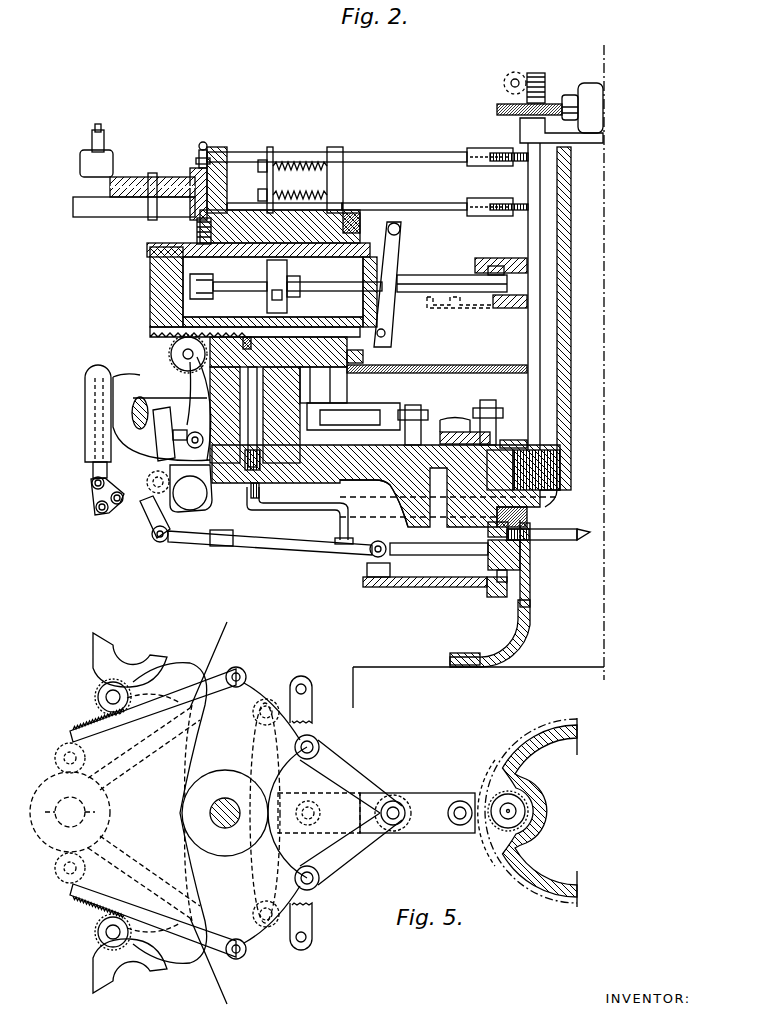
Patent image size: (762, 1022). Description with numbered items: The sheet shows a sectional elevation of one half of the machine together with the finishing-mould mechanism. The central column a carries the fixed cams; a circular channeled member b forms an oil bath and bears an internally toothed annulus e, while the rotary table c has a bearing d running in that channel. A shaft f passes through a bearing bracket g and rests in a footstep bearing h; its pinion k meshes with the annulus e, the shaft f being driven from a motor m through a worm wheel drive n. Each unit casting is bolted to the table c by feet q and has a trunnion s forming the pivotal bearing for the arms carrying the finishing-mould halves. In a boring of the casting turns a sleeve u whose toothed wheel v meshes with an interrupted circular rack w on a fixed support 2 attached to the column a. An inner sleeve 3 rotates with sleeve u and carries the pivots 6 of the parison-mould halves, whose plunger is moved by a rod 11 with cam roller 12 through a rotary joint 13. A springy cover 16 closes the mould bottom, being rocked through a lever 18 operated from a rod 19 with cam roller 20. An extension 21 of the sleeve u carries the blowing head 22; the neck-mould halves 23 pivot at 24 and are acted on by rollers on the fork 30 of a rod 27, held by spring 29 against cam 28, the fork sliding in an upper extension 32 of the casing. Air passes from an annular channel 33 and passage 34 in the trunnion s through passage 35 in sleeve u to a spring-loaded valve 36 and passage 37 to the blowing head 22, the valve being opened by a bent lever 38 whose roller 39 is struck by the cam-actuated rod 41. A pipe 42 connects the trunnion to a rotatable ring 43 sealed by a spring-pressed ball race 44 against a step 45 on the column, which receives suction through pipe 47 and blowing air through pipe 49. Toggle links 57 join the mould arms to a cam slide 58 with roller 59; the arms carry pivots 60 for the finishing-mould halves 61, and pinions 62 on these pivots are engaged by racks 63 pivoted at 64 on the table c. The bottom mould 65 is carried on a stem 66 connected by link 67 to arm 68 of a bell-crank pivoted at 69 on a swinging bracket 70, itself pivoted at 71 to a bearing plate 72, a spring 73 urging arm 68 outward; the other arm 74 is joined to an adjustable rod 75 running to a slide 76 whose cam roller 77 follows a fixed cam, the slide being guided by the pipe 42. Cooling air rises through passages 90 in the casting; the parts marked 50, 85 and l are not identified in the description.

In FIG. 2, the fixed support 2 is at (449, 365).
In FIG. 2, the sleeve 3 is at (331, 243).
In FIG. 2, the pivots 6 is at (150, 296).
In FIG. 2, the rod 11 is at (336, 291).
In FIG. 2, the cam roller 12 is at (500, 308).
In FIG. 2, the rotary joint 13 is at (286, 281).
In FIG. 2, the cover 16 is at (158, 435).
In FIG. 2, the lever 18 is at (425, 306).
In FIG. 2, the rod 19 is at (441, 275).
In FIG. 2, the cam roller 20 is at (493, 258).
In FIG. 2, the extension 21 is at (153, 218).
In FIG. 2, the blowing head 22 is at (106, 166).
In FIG. 2, the halves of the ring or neck mould 23 is at (100, 210).
In FIG. 2, the pivot 24 is at (160, 177).
In FIG. 2, the rod 27 is at (416, 203).
In FIG. 2, the cam 28 is at (507, 198).
In FIG. 2, the spring 29 is at (300, 180).
In FIG. 2, the fork 30 is at (253, 203).
In FIG. 2, the upper extension of the casing 32 is at (226, 160).
In FIG. 2, the annular channel 33 is at (247, 337).
In FIG. 2, the passage 34 is at (171, 353).
In FIG. 2, the passage 35 is at (150, 250).
In FIG. 2, the spring loaded valve 36 is at (197, 232).
In FIG. 2, the passage 37 is at (197, 168).
In FIG. 2, the bent lever 38 is at (203, 142).
In FIG. 2, the roller 39 is at (207, 156).
In FIG. 2, the cam actuated rod 41 is at (382, 152).
In FIG. 2, the pipe 42 is at (253, 492).
In FIG. 2, the rotatable ring 43 is at (528, 562).
In FIG. 2, the spring pressed ball race 44 is at (490, 585).
In FIG. 2, the step 45 is at (488, 531).
In FIG. 2, the pipe 47 is at (590, 536).
In FIG. 2, the pipe 49 is at (560, 545).
In FIG. 2, the rod 50 is at (462, 555).
In FIG. 5, the toggle links 57 is at (355, 775).
In FIG. 5, the cam slide 58 is at (425, 793).
In FIG. 5, the roller 59 is at (460, 825).
In FIG. 5, the pivots 60 is at (98, 695).
In FIG. 5, the halves of the finishing moulds 61 is at (110, 640).
In FIG. 5, the pinions 62 is at (95, 700).
In FIG. 5, the racks 63 is at (70, 735).
In FIG. 5, the pivot 64 is at (245, 674).
In FIG. 2, the bottom mould or block 65 is at (85, 376).
In FIG. 2, the stem 66 is at (93, 469).
In FIG. 2, the link 67 is at (94, 506).
In FIG. 2, the arm of bell crank lever 68 is at (110, 505).
In FIG. 2, the pivot 69 is at (145, 524).
In FIG. 2, the swinging bracket 70 is at (112, 438).
In FIG. 2, the pivot 71 is at (188, 495).
In FIG. 2, the bearing plate 72 is at (270, 506).
In FIG. 2, the compression spring 73 is at (92, 485).
In FIG. 2, the arm of bell crank lever 74 is at (156, 494).
In FIG. 2, the rod 75 is at (270, 555).
In FIG. 2, the slide 76 is at (386, 544).
In FIG. 2, the cam roller 77 is at (367, 571).
In FIG. 2, the spring 85 is at (512, 77).
In FIG. 2, the passages 90 is at (577, 529).
In FIG. 2, the central column a is at (571, 316).
In FIG. 5, the central column a is at (540, 748).
In FIG. 2, the circular channeled member b is at (565, 469).
In FIG. 2, the rotary table c is at (392, 492).
In FIG. 5, the rotary table c is at (222, 630).
In FIG. 2, the bearing d is at (515, 441).
In FIG. 2, the internally toothed annulus e is at (571, 479).
In FIG. 5, the internally toothed annulus e is at (500, 862).
In FIG. 2, the shaft f is at (545, 302).
In FIG. 5, the shaft f is at (515, 809).
In FIG. 2, the bearing bracket g is at (585, 128).
In FIG. 2, the footstep bearing h is at (300, 337).
In FIG. 2, the pinion k is at (565, 456).
In FIG. 5, the pinion k is at (530, 832).
In FIG. 2, the lever l is at (138, 397).
In FIG. 5, the lever l is at (180, 665).
In FIG. 2, the motor m is at (600, 92).
In FIG. 2, the worm wheel drive n is at (550, 98).
In FIG. 2, the feet q is at (347, 397).
In FIG. 5, the feet q is at (313, 700).
In FIG. 2, the trunnion s is at (300, 395).
In FIG. 5, the trunnion s is at (182, 812).
In FIG. 2, the sleeve u is at (351, 213).
In FIG. 2, the toothed wheel v is at (390, 224).
In FIG. 2, the interrupted circular rack w is at (365, 356).